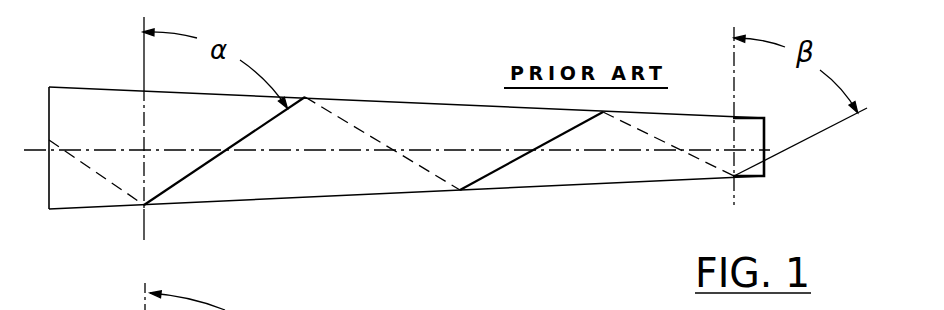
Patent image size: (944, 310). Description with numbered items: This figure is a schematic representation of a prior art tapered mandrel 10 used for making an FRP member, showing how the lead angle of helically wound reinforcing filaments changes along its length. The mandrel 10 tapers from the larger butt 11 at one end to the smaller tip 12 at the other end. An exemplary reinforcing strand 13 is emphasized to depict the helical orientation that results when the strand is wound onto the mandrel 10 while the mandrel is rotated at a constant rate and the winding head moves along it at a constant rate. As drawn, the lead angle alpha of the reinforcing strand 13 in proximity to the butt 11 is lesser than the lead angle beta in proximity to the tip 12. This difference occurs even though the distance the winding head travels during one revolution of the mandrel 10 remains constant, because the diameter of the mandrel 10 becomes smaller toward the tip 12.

The tapered mandrel 10 is at (330, 168).
The butt 11 is at (70, 185).
The tip 12 is at (752, 128).
The reinforcing strand 13 is at (252, 134).